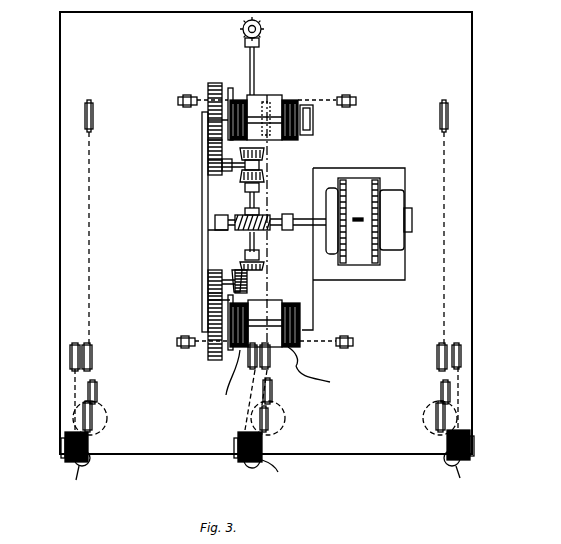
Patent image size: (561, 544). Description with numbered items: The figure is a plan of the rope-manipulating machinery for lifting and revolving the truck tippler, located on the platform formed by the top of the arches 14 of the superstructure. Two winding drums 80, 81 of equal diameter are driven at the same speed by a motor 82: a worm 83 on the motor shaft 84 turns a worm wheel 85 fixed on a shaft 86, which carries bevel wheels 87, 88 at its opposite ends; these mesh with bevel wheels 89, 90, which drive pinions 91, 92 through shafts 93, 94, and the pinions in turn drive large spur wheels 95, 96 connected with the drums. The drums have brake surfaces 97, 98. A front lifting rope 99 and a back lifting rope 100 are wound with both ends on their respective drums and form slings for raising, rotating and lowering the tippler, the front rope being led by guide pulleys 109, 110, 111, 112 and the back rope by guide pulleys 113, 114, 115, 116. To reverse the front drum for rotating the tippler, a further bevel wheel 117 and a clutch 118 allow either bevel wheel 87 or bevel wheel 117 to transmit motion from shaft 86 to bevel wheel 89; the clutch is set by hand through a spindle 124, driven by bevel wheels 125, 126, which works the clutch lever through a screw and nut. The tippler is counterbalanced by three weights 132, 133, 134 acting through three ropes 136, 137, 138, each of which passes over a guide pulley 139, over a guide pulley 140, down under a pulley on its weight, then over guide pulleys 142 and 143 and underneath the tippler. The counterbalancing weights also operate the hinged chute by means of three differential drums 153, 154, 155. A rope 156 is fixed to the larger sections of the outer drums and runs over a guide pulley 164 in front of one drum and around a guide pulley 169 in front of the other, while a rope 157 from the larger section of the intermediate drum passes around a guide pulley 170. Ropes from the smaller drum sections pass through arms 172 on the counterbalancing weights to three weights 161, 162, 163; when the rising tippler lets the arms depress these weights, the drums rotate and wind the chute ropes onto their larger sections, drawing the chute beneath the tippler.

The arches 14 is at (266, 233).
The winding drum 80 is at (300, 128).
The winding drum 81 is at (300, 318).
The motor 82 is at (357, 249).
The worm 83 is at (286, 230).
The motor shaft 84 is at (318, 213).
The worm wheel 85 is at (215, 226).
The shaft 86 is at (250, 201).
The bevel wheel 87 is at (264, 177).
The bevel wheel 88 is at (262, 266).
The bevel wheel 89 is at (246, 180).
The bevel wheel 90 is at (247, 282).
The pinion 91 is at (208, 165).
The pinion 92 is at (208, 280).
The shaft 93 is at (222, 170).
The shaft 94 is at (242, 262).
The large spur wheel 95 is at (208, 130).
The large spur wheel 96 is at (208, 306).
The brake surface 97 is at (229, 88).
The brake surface 98 is at (231, 350).
The front lifting rope 99 is at (306, 98).
The back lifting rope 100 is at (300, 364).
The guide pulley 109 is at (180, 96).
The guide pulley 110 is at (240, 99).
The guide pulley 111 is at (290, 99).
The guide pulley 112 is at (346, 96).
The guide pulley 113 is at (180, 346).
The guide pulley 114 is at (231, 374).
The guide pulley 115 is at (318, 375).
The guide pulley 116 is at (353, 343).
The bevel wheel 117 is at (264, 155).
The clutch 118 is at (259, 165).
The spindle 124 is at (254, 65).
The bevel wheel 125 is at (262, 30).
The bevel wheel 126 is at (245, 42).
The counterbalancing weight 132 is at (107, 418).
The counterbalancing weight 133 is at (285, 418).
The counterbalancing weight 134 is at (457, 416).
The counterbalancing rope 136 is at (90, 206).
The counterbalancing rope 137 is at (298, 263).
The counterbalancing rope 138 is at (445, 253).
The guide pulley 139 is at (93, 116).
The guide pulley 140 is at (97, 386).
The guide pulley 142 is at (92, 426).
The guide pulley 143 is at (92, 352).
The differential drum 153 is at (65, 443).
The differential drum 154 is at (238, 442).
The differential drum 155 is at (447, 447).
The rope 156 is at (73, 393).
The rope 157 is at (246, 407).
The weight 161 is at (75, 479).
The weight 162 is at (281, 470).
The weight 163 is at (453, 478).
The guide pulley 164 is at (70, 358).
The guide pulley 169 is at (461, 350).
The guide pulley 170 is at (258, 324).
The arms 172 is at (90, 462).